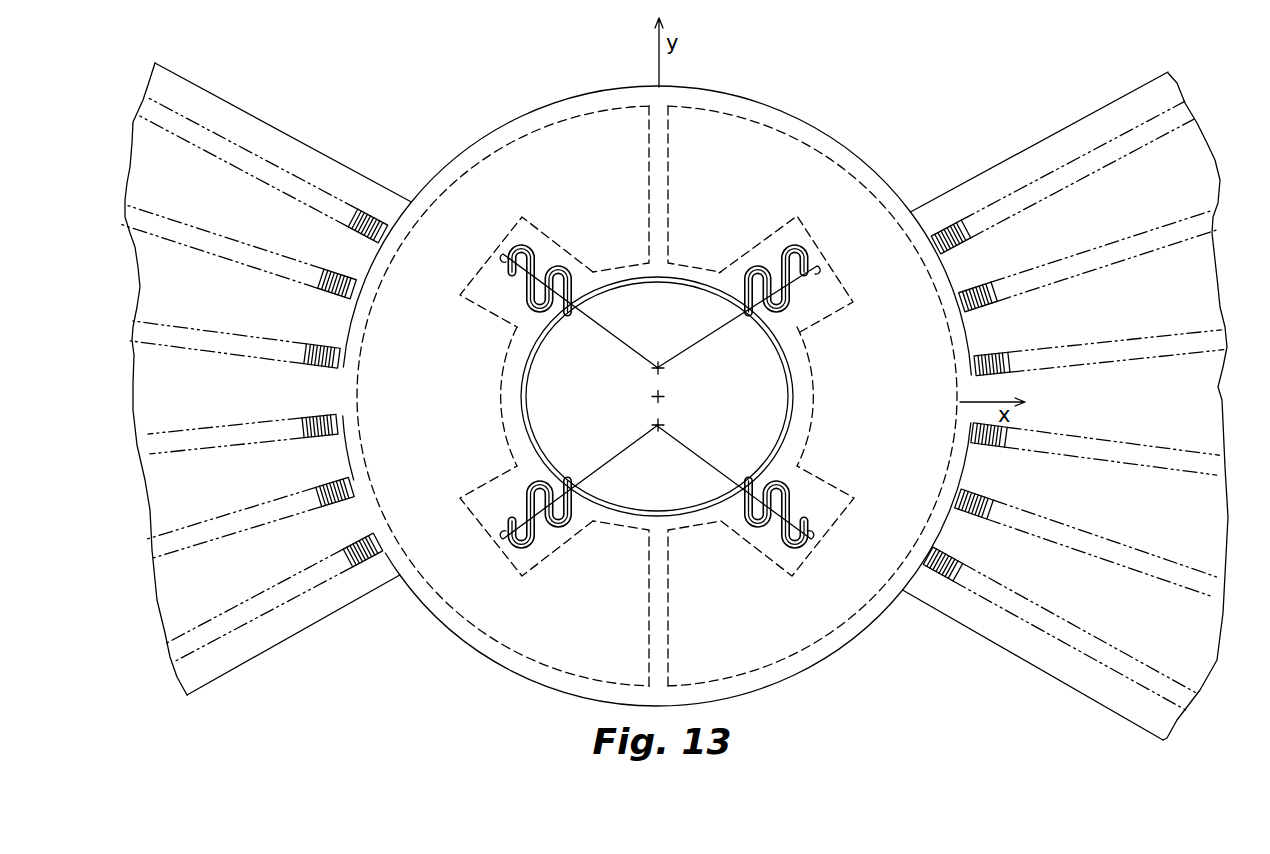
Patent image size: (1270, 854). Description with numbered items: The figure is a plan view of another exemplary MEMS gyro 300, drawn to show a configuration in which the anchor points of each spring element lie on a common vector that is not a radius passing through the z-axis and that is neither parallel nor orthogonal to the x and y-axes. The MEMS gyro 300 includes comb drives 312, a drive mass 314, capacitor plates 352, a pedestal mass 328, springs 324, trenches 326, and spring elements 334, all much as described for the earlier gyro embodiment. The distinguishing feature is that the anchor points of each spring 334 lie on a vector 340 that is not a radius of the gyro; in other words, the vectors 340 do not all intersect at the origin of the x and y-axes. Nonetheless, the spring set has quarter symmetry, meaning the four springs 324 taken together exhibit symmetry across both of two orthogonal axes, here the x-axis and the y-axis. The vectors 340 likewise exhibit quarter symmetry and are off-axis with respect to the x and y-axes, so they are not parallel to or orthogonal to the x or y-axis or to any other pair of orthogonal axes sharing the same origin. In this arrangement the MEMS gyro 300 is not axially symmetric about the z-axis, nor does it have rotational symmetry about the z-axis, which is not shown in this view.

The MEMS gyro 300 is at (417, 90).
The comb drives 312 is at (265, 664).
The drive mass 314 is at (463, 638).
The springs 324 is at (522, 216).
The trenches 326 is at (662, 281).
The pedestal mass 328 is at (583, 429).
The spring elements 334 is at (528, 296).
The vector 340 is at (687, 349).
The capacitor plates 352 is at (527, 133).